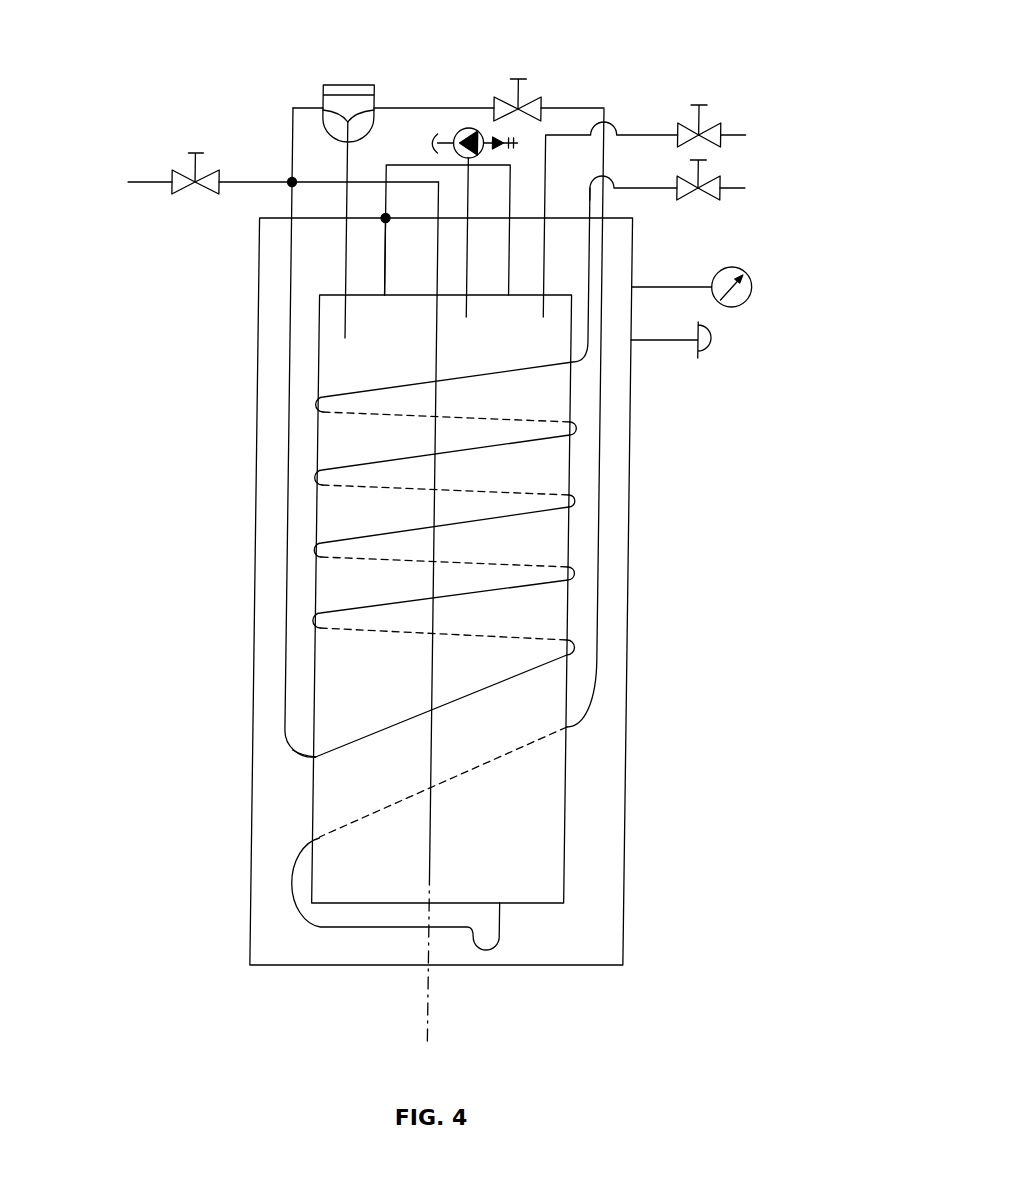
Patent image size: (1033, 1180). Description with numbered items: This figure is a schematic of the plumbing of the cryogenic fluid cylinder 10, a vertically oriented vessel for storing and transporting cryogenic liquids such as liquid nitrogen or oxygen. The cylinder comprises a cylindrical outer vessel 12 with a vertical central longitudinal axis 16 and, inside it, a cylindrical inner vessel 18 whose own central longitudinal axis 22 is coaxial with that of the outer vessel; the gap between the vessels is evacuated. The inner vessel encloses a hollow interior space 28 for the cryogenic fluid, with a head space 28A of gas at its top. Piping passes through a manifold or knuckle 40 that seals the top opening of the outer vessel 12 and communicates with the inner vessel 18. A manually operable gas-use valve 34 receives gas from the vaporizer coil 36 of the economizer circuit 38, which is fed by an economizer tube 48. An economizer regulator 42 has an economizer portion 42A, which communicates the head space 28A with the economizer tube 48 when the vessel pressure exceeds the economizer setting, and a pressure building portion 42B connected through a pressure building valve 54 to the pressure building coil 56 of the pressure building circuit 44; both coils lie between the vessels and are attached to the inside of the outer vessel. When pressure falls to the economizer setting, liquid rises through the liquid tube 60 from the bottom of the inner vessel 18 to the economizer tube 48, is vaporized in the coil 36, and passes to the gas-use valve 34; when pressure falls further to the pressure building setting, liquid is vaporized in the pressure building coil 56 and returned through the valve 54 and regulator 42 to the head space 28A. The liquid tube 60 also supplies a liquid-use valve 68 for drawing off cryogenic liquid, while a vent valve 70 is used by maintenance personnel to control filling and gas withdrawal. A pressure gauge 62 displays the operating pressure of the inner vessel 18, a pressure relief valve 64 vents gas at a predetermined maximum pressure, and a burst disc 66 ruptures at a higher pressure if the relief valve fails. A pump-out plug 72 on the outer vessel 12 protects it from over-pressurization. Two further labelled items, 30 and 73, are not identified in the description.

The cryogenic fluid cylinder 10 is at (449, 529).
The outer vessel 12 is at (625, 770).
The central longitudinal axis 16 is at (487, 612).
The inner vessel 18 is at (506, 599).
The central longitudinal axis 22 is at (441, 1012).
The hollow interior space 28 is at (442, 599).
The head space 28A is at (506, 330).
The inlet conduit 30 is at (386, 252).
The gas-use valve 34 is at (710, 200).
The vaporizer coil 36 is at (300, 750).
The economizer circuit 38 is at (285, 123).
The manifold 40 is at (393, 162).
The economizer regulator 42 is at (322, 84).
The economizer portion 42A is at (347, 121).
The pressure building portion 42B is at (348, 121).
The pressure building circuit 44 is at (608, 97).
The economizer tube 48 is at (345, 146).
The pressure building valve 54 is at (518, 77).
The pressure building coil 56 is at (324, 935).
The liquid tube 60 is at (578, 528).
The pressure gauge 62 is at (468, 127).
The pressure relief valve 64 is at (504, 151).
The burst device 66 is at (433, 131).
The liquid-use valve 68 is at (180, 170).
The vent valve 70 is at (700, 104).
The pump-out plug 72 is at (708, 352).
The pressure gauge 73 is at (742, 305).